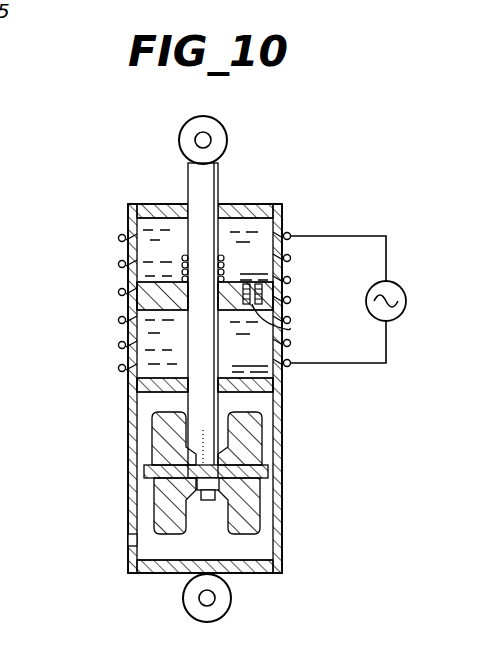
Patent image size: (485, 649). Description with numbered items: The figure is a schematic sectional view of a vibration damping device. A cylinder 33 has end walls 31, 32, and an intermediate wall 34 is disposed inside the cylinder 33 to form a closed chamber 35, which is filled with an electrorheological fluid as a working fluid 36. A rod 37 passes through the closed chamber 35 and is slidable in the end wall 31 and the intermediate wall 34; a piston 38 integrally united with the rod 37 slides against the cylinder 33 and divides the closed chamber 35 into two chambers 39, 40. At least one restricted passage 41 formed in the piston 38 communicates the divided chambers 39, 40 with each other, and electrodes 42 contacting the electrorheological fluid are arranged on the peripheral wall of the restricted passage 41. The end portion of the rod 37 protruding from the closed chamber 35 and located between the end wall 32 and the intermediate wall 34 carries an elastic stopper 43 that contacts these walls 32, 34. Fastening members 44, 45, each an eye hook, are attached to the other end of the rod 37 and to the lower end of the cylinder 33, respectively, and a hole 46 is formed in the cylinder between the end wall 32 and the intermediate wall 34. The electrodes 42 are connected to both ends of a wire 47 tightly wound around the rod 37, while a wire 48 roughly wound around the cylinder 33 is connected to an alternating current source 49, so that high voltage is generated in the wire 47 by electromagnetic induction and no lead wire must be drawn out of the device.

The end wall 31 is at (248, 206).
The end wall 32 is at (245, 572).
The cylinder 33 is at (284, 463).
The intermediate wall 34 is at (272, 398).
The closed chamber 35 is at (163, 228).
The working fluid 36 is at (258, 234).
The rod 37 is at (192, 343).
The piston 38 is at (137, 298).
The divided chamber 39 is at (225, 264).
The divided chamber 40 is at (249, 355).
The restricted passage 41 is at (286, 287).
The electrodes 42 is at (296, 330).
The elastic stopper 43 is at (265, 532).
The fastening member 44 is at (218, 142).
The fastening member 45 is at (183, 602).
The hole 46 is at (134, 540).
The wire 47 is at (132, 232).
The wire 48 is at (120, 266).
The alternating current source 49 is at (405, 298).